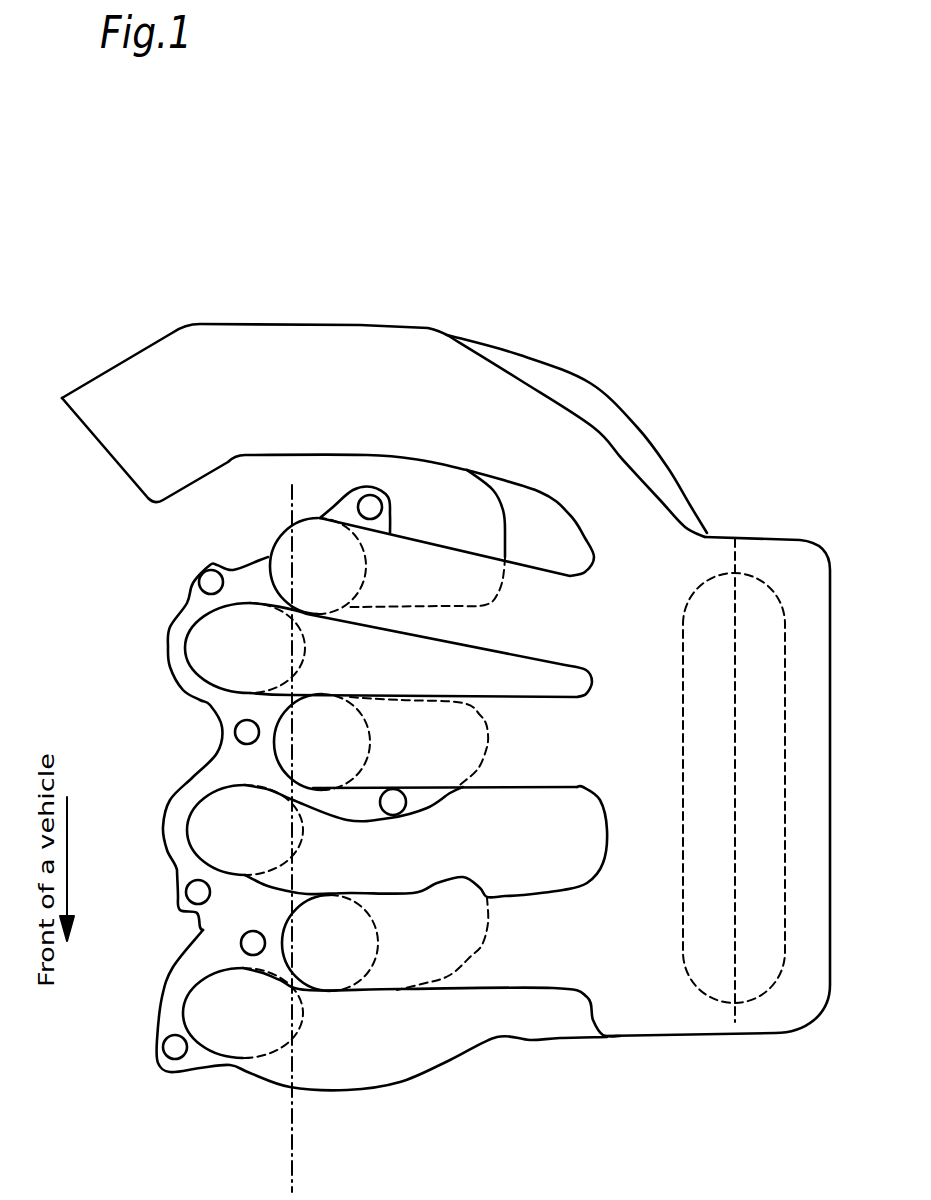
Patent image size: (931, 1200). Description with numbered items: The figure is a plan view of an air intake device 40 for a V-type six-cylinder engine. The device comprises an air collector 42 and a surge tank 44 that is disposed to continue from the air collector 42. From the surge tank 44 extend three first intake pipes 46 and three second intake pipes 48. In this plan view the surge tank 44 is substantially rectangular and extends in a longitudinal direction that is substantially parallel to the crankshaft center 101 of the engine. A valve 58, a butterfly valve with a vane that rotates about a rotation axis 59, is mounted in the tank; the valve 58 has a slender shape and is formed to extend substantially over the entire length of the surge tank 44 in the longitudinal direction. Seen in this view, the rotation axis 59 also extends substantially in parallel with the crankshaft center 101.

The air intake device 40 is at (383, 252).
The air collector 42 is at (280, 350).
The surge tank 44 is at (666, 1013).
The first intake pipes 46 is at (387, 573).
The second intake pipes 48 is at (318, 667).
The valve 58 is at (758, 578).
The rotation axis 59 is at (757, 985).
The crankshaft center 101 is at (292, 1149).